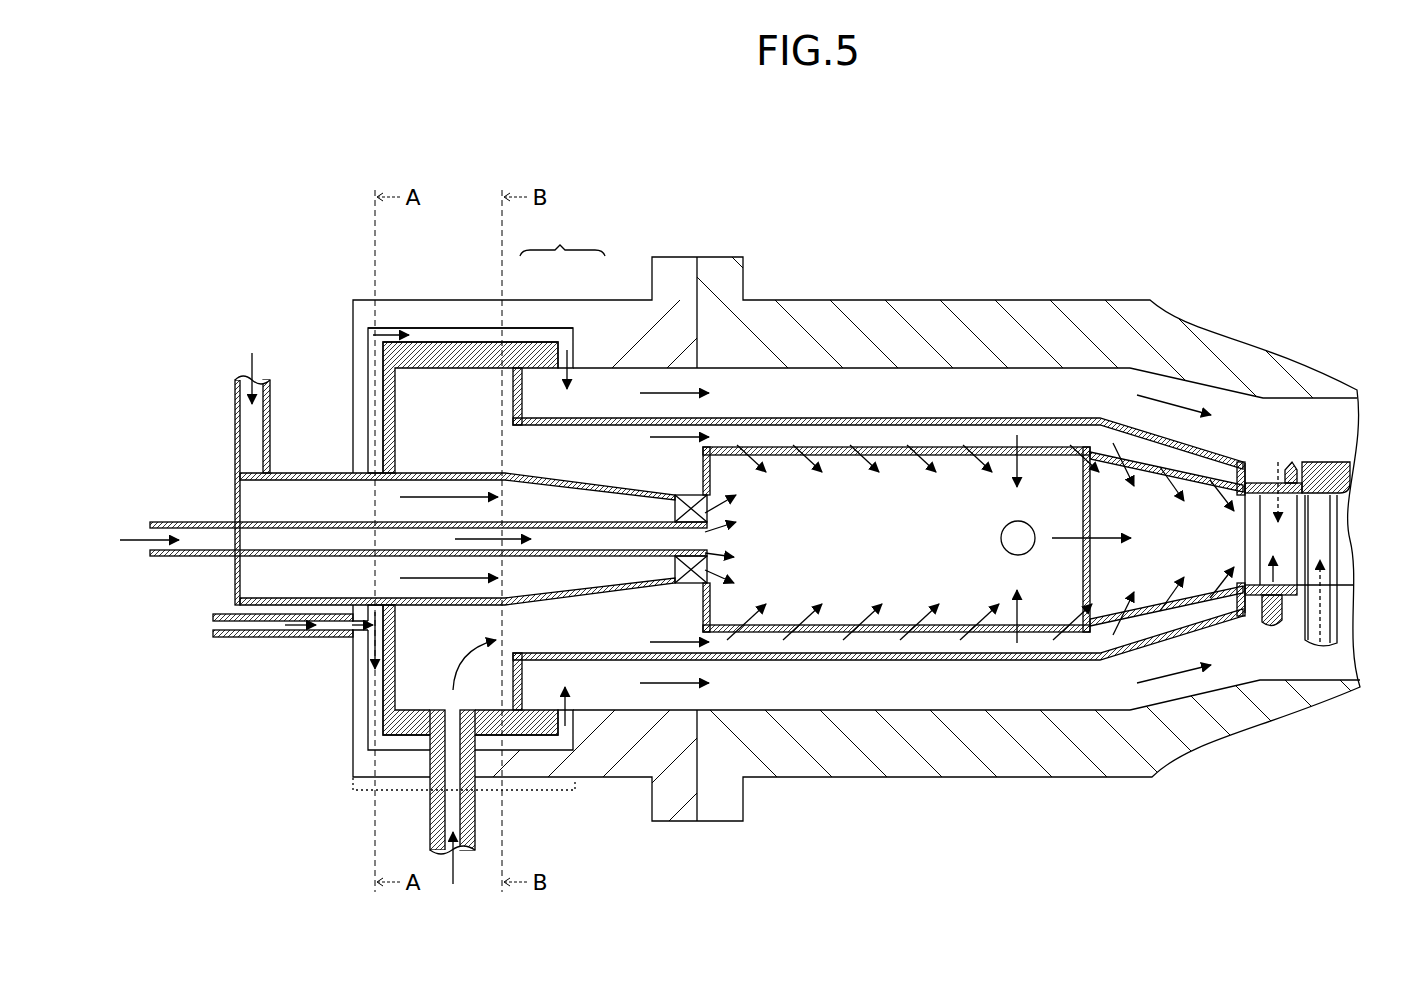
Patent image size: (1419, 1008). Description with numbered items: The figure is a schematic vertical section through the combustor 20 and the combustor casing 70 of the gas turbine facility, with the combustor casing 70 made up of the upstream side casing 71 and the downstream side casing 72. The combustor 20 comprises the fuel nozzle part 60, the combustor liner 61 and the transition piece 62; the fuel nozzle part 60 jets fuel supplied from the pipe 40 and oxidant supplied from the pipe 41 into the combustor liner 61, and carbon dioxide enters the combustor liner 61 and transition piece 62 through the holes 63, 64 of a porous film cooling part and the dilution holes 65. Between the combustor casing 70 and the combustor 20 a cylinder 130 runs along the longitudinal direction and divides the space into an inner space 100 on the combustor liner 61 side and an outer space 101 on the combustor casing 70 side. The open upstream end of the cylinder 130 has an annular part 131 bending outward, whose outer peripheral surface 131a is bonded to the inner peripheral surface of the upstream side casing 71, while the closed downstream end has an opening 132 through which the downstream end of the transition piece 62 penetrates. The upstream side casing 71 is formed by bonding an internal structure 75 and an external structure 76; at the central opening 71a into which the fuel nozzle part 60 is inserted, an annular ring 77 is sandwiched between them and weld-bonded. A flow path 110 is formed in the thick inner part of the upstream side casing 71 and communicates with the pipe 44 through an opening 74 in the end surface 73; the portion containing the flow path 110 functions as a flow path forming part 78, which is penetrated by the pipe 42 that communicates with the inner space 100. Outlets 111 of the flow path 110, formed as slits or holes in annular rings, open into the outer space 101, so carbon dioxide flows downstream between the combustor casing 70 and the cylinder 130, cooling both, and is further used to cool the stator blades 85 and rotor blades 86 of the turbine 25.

The combustor 20 is at (700, 468).
The turbine 25 is at (1312, 458).
The pipe 40 is at (192, 558).
The pipe 41 is at (233, 425).
The pipe 42 is at (430, 824).
The pipe 44 is at (248, 638).
The fuel nozzle part 60 is at (612, 600).
The combustor liner 61 is at (950, 636).
The transition piece 62 is at (1262, 620).
The holes 63 is at (855, 633).
The holes 64 is at (1120, 624).
The dilution holes 65 is at (1000, 538).
The combustor casing 70 is at (716, 238).
The upstream side casing 71 is at (562, 239).
The opening 71a is at (382, 440).
The downstream side casing 72 is at (915, 320).
The end surface 73 is at (355, 728).
The opening 74 is at (352, 632).
The internal structure 75 is at (512, 345).
The external structure 76 is at (572, 326).
The annular ring 77 is at (397, 468).
The flow path forming part 78 is at (560, 791).
The stator blades 85 is at (1287, 530).
The rotor blades 86 is at (1323, 550).
The inner space 100 is at (455, 405).
The outer space 101 is at (817, 397).
The flow path 110 is at (372, 410).
The outlets 111 is at (575, 388).
The cylinder 130 is at (628, 426).
The annular part 131 is at (524, 400).
The outer peripheral surface 131a is at (508, 432).
The opening 132 is at (1240, 508).